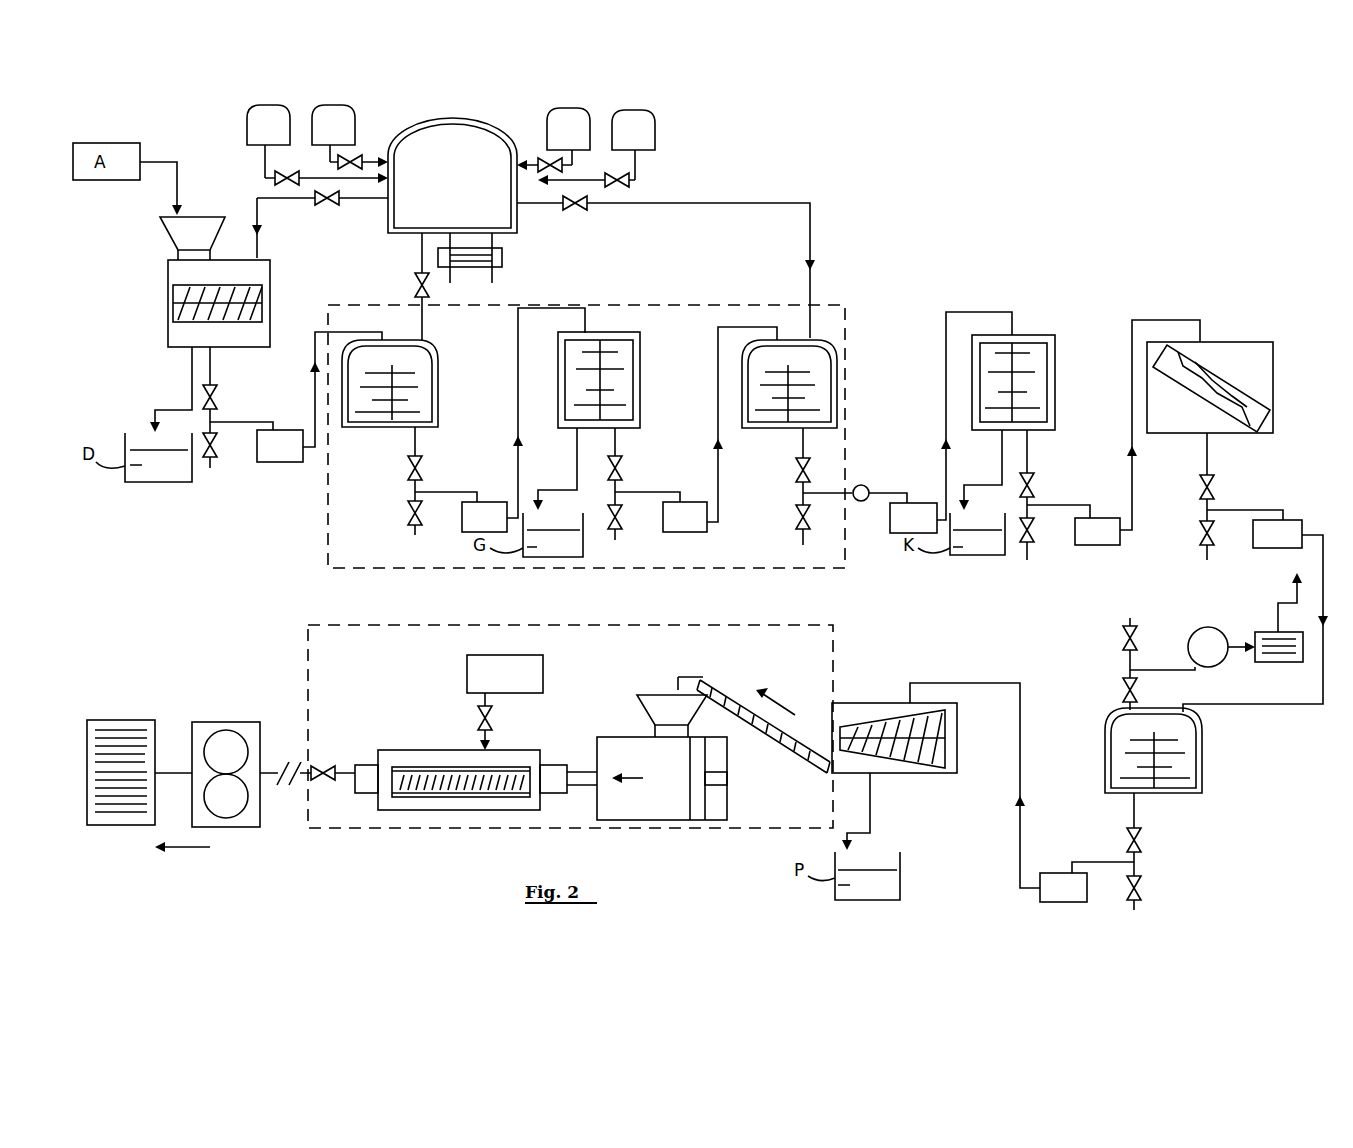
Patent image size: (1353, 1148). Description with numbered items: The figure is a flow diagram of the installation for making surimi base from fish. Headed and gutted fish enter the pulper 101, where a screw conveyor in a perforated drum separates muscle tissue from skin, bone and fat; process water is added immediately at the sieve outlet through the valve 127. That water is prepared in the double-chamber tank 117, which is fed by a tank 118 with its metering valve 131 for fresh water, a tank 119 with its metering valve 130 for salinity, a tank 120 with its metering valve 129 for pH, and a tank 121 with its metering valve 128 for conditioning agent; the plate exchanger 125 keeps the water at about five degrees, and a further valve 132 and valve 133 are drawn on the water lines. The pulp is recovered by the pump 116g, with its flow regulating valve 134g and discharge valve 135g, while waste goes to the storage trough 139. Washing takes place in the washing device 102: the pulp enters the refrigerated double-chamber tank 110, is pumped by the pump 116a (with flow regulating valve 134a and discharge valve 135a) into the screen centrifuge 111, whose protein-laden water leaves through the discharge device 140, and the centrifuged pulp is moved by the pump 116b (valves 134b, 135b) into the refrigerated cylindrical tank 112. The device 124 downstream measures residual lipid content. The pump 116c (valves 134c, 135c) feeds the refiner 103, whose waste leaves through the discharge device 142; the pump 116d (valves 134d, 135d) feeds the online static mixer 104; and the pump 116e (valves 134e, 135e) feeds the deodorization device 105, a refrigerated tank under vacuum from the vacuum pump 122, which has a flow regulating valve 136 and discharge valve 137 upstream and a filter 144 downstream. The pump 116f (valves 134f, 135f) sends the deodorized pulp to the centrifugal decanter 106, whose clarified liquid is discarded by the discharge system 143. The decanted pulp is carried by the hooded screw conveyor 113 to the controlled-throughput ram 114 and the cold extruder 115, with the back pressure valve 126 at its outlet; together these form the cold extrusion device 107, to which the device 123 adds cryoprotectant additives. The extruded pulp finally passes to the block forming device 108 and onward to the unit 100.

The film winder 100 is at (125, 825).
The pulper 101 is at (168, 298).
The washing device 102 is at (322, 522).
The refiner 103 is at (1055, 398).
The online static mixer 104 is at (1273, 400).
The deodorization device 105 is at (1105, 742).
The constant-flow centrifugal decanter 106 is at (928, 773).
The cold extrusion device 107 is at (302, 668).
The block forming device 108 is at (230, 827).
The refrigerated double-chamber tank 110 is at (438, 390).
The screen centrifuge 111 is at (640, 392).
The refrigerated double-chamber cylindrical tank 112 is at (837, 392).
The hooded screw conveyor 113 is at (772, 748).
The controlled-throughput ram 114 is at (605, 737).
The cold extruder 115 is at (420, 750).
The pump 116a is at (490, 502).
The pump 116b is at (690, 502).
The pump 116c is at (918, 503).
The pump 116d is at (1100, 518).
The pump 116e is at (1283, 520).
The pump 116f is at (1065, 873).
The pump 116g is at (278, 430).
The double-chamber tank 117 is at (396, 238).
The tank 118 is at (655, 128).
The tank 119 is at (547, 120).
The tank 120 is at (355, 118).
The tank 121 is at (247, 118).
The vacuum pump 122 is at (1205, 627).
The device 123 is at (467, 666).
The device for measuring the residual lipid content 124 is at (861, 501).
The plate exchanger 125 is at (502, 258).
The back pressure valve 126 is at (330, 762).
The valve 127 is at (338, 208).
The metering valve 128 is at (276, 183).
The metering valve 129 is at (338, 166).
The metering valve 130 is at (560, 173).
The metering valve 131 is at (628, 190).
The valve 132 is at (580, 212).
The valve 133 is at (414, 294).
The flow regulating valve 134a is at (422, 478).
The flow regulating valve 134b is at (622, 478).
The flow regulating valve 134c is at (810, 476).
The flow regulating valve 134d is at (1034, 492).
The flow regulating valve 134e is at (1214, 494).
The flow regulating valve 134f is at (1141, 848).
The flow regulating valve 134g is at (218, 398).
The discharge valve 135a is at (418, 528).
The discharge valve 135b is at (618, 542).
The discharge valve 135c is at (806, 546).
The discharge valve 135d is at (1030, 560).
The discharge valve 135e is at (1200, 545).
The discharge valve 135f is at (1141, 895).
The discharge valve 135g is at (214, 458).
The flow regulating valve 136 is at (1122, 686).
The discharge valve 137 is at (1122, 636).
The storage trough 139 is at (160, 482).
The discharge device 140 is at (574, 557).
The discharge device 142 is at (990, 556).
The discharge system 143 is at (900, 880).
The filter 144 is at (1282, 662).